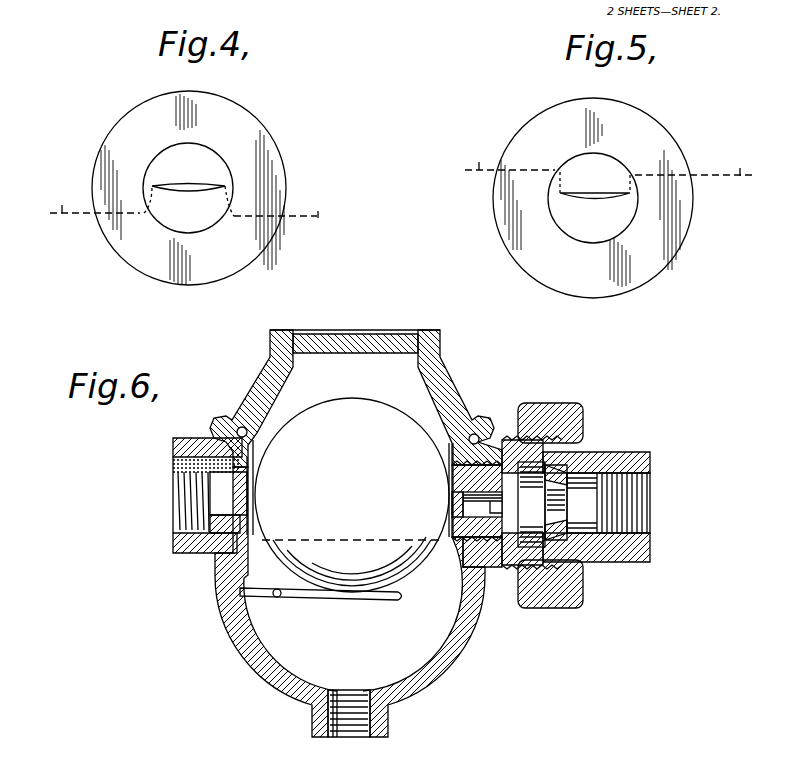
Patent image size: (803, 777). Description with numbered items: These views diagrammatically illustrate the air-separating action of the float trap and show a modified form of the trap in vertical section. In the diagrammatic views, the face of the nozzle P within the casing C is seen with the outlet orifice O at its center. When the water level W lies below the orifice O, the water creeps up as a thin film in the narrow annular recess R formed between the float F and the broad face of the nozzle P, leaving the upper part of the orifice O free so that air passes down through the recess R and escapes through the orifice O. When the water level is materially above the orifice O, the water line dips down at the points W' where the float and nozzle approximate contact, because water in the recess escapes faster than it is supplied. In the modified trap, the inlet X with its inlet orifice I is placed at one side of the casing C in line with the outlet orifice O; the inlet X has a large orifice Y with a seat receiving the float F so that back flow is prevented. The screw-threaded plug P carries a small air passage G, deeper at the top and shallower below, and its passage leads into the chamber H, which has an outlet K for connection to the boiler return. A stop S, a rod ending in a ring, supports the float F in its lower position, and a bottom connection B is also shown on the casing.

In FIG. 4, the casing C is at (128, 116).
In FIG. 5, the casing C is at (652, 272).
In FIG. 4, the outlet orifice O is at (196, 184).
In FIG. 5, the outlet orifice O is at (598, 192).
In FIG. 6, the outlet orifice O is at (452, 497).
In FIG. 4, the water level W is at (184, 200).
In FIG. 5, the water level W is at (611, 152).
In FIG. 5, the dipping points of water line W' is at (603, 216).
In FIG. 4, the nozzle P is at (178, 215).
In FIG. 5, the nozzle P is at (580, 233).
In FIG. 6, the nozzle P is at (500, 442).
In FIG. 6, the inlet X is at (173, 478).
In FIG. 6, the orifice Y is at (233, 488).
In FIG. 6, the float F is at (352, 495).
In FIG. 6, the annular recess R is at (452, 460).
In FIG. 6, the air passage G is at (469, 436).
In FIG. 6, the chamber H is at (530, 503).
In FIG. 6, the outlet K is at (645, 500).
In FIG. 6, the inlet orifice I is at (215, 587).
In FIG. 6, the stop S is at (388, 600).
In FIG. 6, the bottom outlet B is at (355, 727).